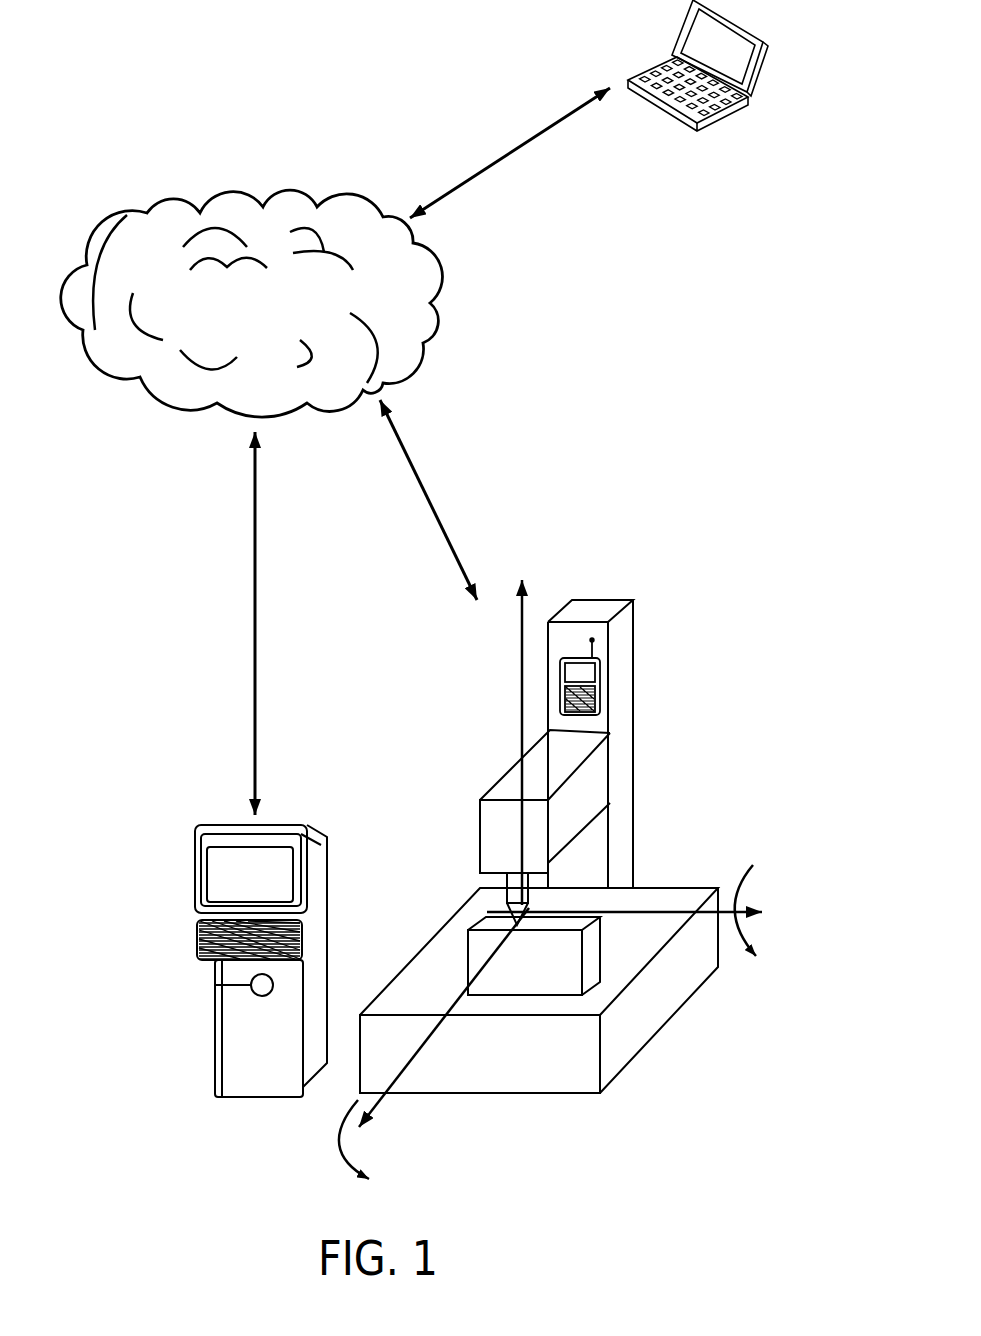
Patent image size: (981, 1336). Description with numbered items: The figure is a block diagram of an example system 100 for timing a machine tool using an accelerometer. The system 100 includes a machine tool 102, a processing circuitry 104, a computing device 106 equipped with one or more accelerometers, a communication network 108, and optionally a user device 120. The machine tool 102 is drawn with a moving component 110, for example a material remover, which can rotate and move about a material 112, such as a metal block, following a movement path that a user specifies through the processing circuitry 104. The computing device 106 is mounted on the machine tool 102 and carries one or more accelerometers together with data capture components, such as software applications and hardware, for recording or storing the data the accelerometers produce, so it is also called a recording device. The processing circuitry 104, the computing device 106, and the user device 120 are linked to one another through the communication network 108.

The system 100 is at (131, 59).
The machine tool 102 is at (632, 1058).
The processing circuitry 104 is at (263, 1097).
The computing device 106 is at (597, 685).
The communication network 108 is at (252, 303).
The moving component 110 is at (505, 888).
The material 112 is at (565, 977).
The user device 120 is at (710, 80).